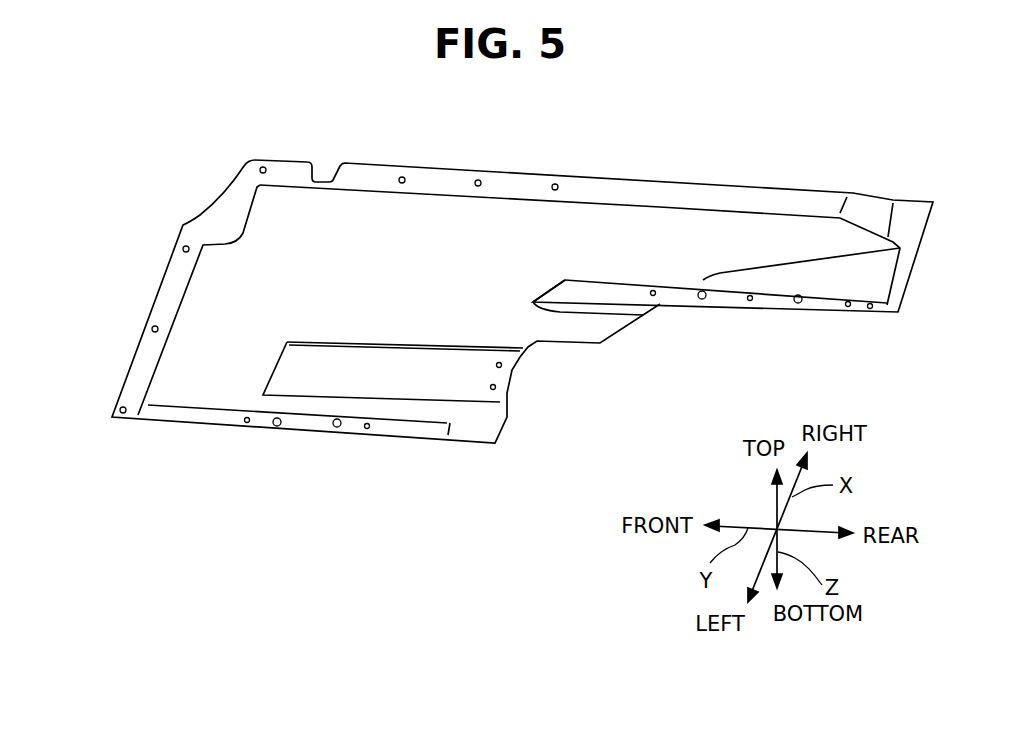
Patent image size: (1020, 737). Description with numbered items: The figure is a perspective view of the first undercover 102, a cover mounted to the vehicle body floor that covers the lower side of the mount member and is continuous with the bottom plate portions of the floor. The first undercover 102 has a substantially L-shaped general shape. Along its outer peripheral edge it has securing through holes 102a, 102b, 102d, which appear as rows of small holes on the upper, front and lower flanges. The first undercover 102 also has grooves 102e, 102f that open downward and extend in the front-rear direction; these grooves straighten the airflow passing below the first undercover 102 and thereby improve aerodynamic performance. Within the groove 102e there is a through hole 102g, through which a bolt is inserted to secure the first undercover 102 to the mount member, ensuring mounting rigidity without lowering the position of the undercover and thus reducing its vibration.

The first undercover 102 is at (320, 213).
The securing through hole 102a is at (263, 166).
The securing through hole 102b is at (183, 250).
The securing through hole 102d is at (247, 424).
The groove 102e is at (305, 372).
The groove 102f is at (600, 290).
The through hole 102g is at (499, 365).